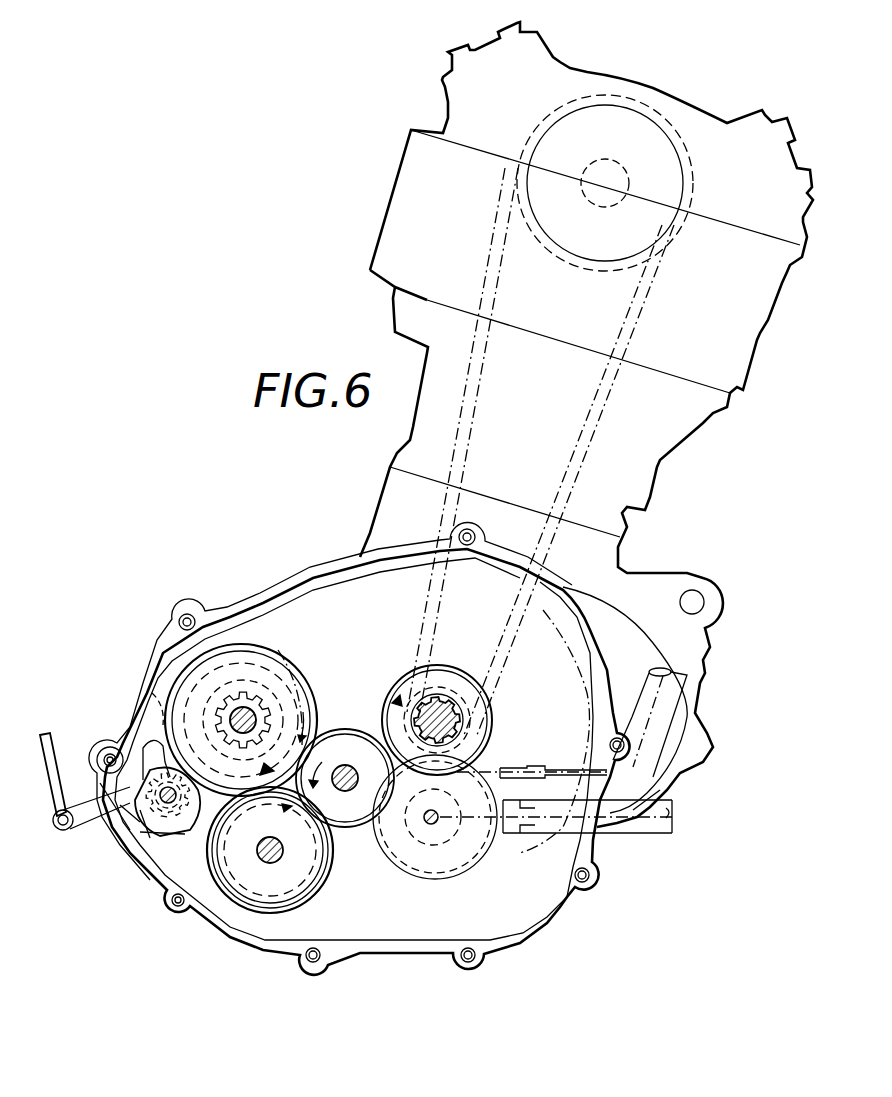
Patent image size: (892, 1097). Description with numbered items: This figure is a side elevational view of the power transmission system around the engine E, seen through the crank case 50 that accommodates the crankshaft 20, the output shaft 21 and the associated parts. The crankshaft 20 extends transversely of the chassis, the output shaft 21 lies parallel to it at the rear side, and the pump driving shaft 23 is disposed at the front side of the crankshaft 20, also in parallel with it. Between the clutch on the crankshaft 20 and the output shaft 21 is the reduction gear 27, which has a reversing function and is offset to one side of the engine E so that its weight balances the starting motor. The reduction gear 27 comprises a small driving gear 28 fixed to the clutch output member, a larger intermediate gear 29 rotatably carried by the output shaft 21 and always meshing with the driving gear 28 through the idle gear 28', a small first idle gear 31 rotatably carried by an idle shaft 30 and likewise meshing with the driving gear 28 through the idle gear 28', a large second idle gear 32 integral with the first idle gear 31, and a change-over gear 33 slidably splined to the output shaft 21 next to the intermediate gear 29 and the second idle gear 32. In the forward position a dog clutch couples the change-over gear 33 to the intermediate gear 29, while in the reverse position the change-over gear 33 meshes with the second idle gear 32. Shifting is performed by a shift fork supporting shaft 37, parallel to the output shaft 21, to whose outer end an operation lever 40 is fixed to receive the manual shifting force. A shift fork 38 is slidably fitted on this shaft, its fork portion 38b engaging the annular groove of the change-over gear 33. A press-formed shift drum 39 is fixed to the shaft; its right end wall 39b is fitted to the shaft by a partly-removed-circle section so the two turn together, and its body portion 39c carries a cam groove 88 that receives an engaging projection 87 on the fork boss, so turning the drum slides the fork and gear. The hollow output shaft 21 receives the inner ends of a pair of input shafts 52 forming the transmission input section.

The engine E is at (700, 461).
The crankshaft 20 is at (433, 700).
The output shaft 21 is at (237, 700).
The pump driving shaft 23 is at (437, 817).
The reduction gear 27 is at (277, 648).
The driving gear 28 is at (452, 720).
The idle gear 28' is at (345, 761).
The intermediate gear 29 is at (313, 668).
The idle shaft 30 is at (266, 863).
The first idle gear 31 is at (323, 873).
The second idle gear 32 is at (307, 905).
The change-over gear 33 is at (252, 648).
The shift fork supporting shaft 37 is at (168, 820).
The shift fork 38 is at (156, 745).
The fork portion 38b is at (152, 693).
The shift drum 39 is at (143, 790).
The right end wall 39b is at (128, 753).
The body portion 39c is at (182, 835).
The operation lever 40 is at (85, 823).
The crank case 50 is at (278, 586).
The input shafts 52 is at (250, 700).
The engaging projection 87 is at (145, 838).
The cam groove 88 is at (128, 815).